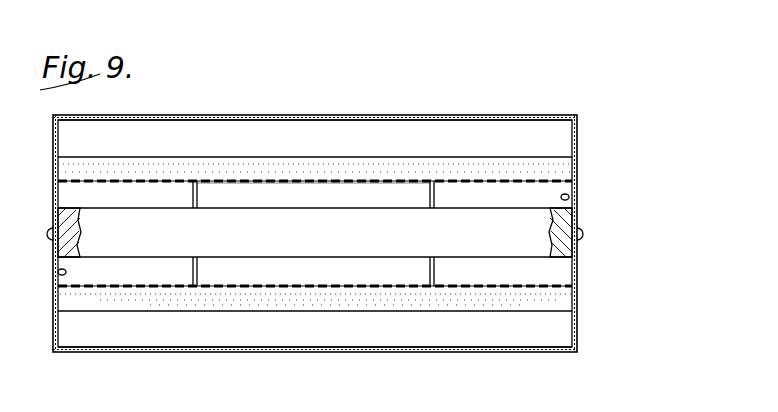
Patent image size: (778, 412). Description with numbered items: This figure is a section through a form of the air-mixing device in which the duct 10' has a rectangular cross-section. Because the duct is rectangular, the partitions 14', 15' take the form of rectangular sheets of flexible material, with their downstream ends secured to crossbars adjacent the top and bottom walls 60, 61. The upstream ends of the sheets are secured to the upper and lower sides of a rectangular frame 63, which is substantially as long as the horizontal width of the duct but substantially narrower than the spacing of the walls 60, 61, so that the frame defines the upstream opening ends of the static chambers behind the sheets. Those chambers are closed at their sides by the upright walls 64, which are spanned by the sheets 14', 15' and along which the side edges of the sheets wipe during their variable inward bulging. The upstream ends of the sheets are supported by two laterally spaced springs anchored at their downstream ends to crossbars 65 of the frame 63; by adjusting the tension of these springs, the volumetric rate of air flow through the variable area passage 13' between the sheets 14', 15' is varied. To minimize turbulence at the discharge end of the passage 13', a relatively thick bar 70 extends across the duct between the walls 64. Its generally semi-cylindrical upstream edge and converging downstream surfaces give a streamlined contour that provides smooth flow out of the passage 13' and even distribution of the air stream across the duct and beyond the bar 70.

The duct 10' is at (344, 222).
The top wall 60 is at (445, 116).
The bottom wall 61 is at (396, 352).
The upright walls 64 is at (54, 138).
The partition 14' is at (315, 156).
The variable area passage 13' is at (291, 194).
The bar 70 is at (228, 217).
The rectangular frame 63 is at (60, 272).
The crossbars 65 is at (198, 270).
The partition 15' is at (315, 311).